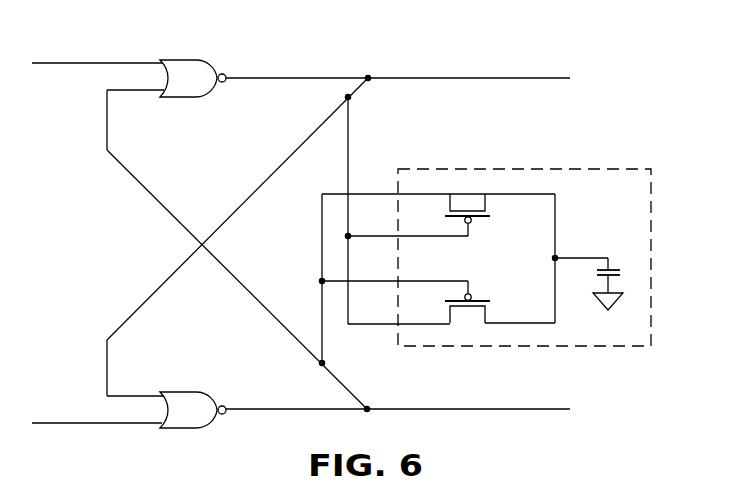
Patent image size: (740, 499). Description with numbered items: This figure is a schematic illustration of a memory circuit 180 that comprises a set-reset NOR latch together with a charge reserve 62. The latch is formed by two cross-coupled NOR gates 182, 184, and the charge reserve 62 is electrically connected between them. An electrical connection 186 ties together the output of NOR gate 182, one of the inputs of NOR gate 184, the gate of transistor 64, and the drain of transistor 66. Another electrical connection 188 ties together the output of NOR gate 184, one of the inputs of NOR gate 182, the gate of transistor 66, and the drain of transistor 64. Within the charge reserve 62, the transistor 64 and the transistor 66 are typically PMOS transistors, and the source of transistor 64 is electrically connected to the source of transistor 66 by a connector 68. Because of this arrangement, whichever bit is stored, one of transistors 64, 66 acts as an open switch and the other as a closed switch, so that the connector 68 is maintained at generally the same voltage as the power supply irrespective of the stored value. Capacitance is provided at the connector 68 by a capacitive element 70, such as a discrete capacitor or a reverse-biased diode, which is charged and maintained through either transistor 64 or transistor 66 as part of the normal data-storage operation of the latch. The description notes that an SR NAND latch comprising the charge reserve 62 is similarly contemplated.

The memory circuit 180 is at (613, 48).
The NOR gate 182 is at (195, 58).
The NOR gate 184 is at (197, 430).
The electrical connection 186 is at (312, 130).
The electrical connection 188 is at (322, 328).
The charge reserve 62 is at (558, 168).
The transistor 64 is at (477, 202).
The transistor 66 is at (477, 332).
The connector 68 is at (557, 224).
The capacitive element 70 is at (614, 260).